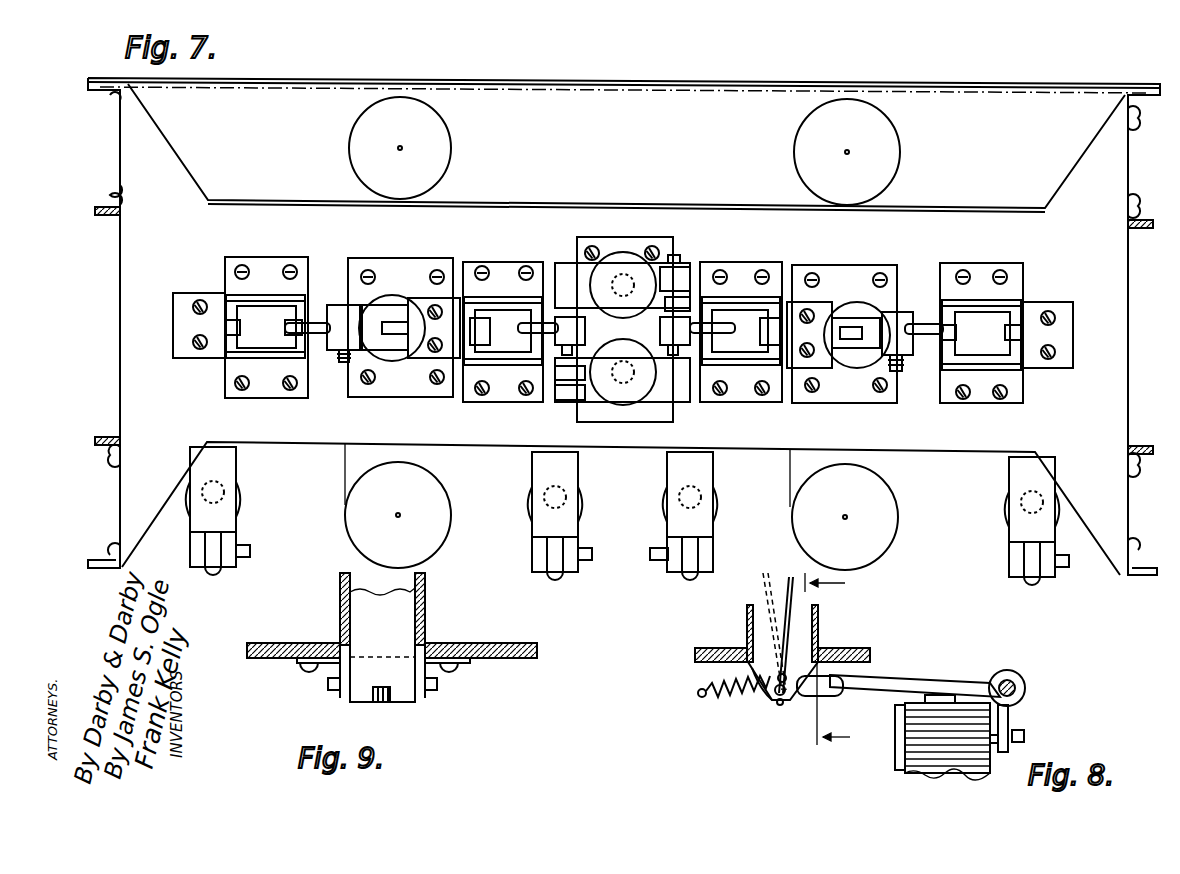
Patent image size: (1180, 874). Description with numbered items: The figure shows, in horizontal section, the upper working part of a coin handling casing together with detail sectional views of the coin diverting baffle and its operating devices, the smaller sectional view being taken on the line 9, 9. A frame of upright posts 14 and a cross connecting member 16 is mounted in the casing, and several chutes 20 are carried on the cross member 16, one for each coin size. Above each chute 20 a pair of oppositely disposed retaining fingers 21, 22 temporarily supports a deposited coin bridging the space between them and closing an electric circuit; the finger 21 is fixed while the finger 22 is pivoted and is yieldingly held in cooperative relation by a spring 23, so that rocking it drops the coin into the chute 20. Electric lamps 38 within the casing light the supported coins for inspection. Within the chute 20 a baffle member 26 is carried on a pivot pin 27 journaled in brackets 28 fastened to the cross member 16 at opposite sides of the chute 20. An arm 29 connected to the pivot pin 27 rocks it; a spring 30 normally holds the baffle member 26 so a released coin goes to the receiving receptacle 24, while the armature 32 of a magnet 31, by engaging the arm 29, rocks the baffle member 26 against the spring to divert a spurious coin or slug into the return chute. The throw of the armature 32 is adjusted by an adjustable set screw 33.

In FIG. 8, the section line 9 is at (821, 664).
In FIG. 7, the upright posts 14 is at (110, 218).
In FIG. 9, the cross connecting member 16 is at (502, 643).
In FIG. 8, the cross connecting member 16 is at (872, 658).
In FIG. 7, the chute 20 is at (240, 368).
In FIG. 9, the chute 20 is at (428, 586).
In FIG. 8, the chute 20 is at (822, 628).
In FIG. 7, the fixed retaining finger 21 is at (232, 325).
In FIG. 7, the pivoted retaining finger 22 is at (315, 320).
In FIG. 7, the spring 23 is at (344, 360).
In FIG. 7, the receiving receptacle 24 is at (632, 258).
In FIG. 9, the baffle member 26 is at (405, 622).
In FIG. 8, the baffle member 26 is at (800, 598).
In FIG. 9, the pivot pin 27 is at (332, 690).
In FIG. 8, the pivot pin 27 is at (778, 706).
In FIG. 9, the brackets 28 is at (305, 665).
In FIG. 8, the brackets 28 is at (760, 690).
In FIG. 9, the arm 29 is at (382, 702).
In FIG. 8, the arm 29 is at (830, 696).
In FIG. 8, the spring 30 is at (712, 684).
In FIG. 7, the magnet 31 is at (250, 512).
In FIG. 8, the magnet 31 is at (912, 752).
In FIG. 7, the armature 32 is at (627, 516).
In FIG. 8, the armature 32 is at (945, 682).
In FIG. 8, the adjustable set screw 33 is at (1026, 736).
In FIG. 7, the electric lamps 38 is at (438, 165).